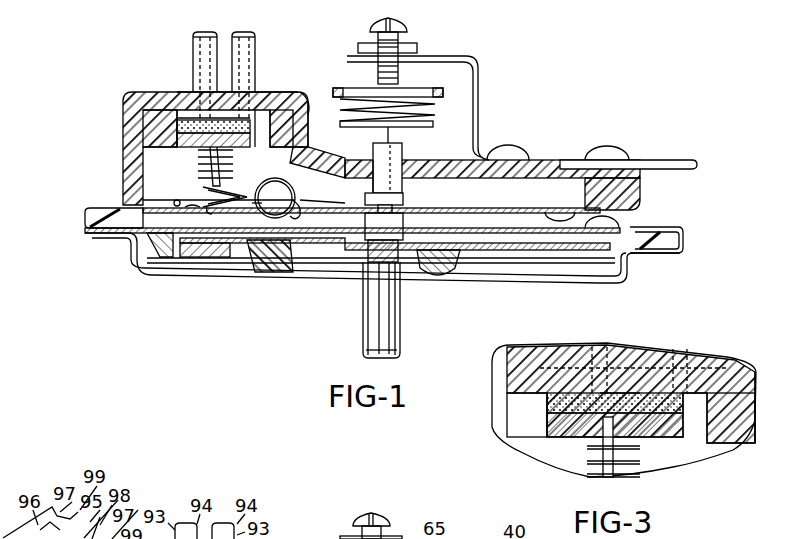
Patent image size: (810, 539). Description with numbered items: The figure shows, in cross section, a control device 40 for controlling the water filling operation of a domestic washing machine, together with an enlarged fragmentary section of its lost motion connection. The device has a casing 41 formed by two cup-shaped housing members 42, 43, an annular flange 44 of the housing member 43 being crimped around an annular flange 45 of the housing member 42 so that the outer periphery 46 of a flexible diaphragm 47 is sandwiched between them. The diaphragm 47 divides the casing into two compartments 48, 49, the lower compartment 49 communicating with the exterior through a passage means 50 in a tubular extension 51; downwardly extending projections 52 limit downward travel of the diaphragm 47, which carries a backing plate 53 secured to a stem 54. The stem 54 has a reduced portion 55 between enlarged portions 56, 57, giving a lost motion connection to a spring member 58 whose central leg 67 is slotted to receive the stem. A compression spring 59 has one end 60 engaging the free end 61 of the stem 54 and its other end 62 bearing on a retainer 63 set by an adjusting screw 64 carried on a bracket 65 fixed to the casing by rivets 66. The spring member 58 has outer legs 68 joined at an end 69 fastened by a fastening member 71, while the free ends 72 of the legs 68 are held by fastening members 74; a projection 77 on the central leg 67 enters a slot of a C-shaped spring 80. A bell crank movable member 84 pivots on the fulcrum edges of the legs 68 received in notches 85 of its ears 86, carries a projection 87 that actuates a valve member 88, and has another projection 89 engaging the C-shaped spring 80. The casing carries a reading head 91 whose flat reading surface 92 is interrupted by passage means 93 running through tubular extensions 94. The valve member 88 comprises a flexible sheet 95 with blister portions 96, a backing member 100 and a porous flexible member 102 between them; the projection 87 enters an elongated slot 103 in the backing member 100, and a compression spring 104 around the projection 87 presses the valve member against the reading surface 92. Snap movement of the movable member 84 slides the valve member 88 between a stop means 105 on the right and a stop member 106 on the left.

In FIG. 1, the control device 40 is at (506, 35).
In FIG. 1, the casing 41 is at (125, 152).
In FIG. 1, the housing member 42 is at (632, 183).
In FIG. 3, the housing member 42 is at (500, 360).
In FIG. 1, the housing member 43 is at (570, 284).
In FIG. 1, the annular flange 44 is at (683, 247).
In FIG. 1, the annular flange 45 is at (663, 232).
In FIG. 1, the outer periphery 46 is at (655, 253).
In FIG. 1, the flexible diaphragm 47 is at (502, 256).
In FIG. 1, the compartment 48 is at (537, 160).
In FIG. 1, the compartment 49 is at (545, 282).
In FIG. 1, the passage means 50 is at (400, 326).
In FIG. 1, the tubular extension 51 is at (365, 348).
In FIG. 1, the projections 52 is at (262, 272).
In FIG. 1, the backing plate 53 is at (500, 247).
In FIG. 1, the stem 54 is at (402, 186).
In FIG. 1, the reduced portion 55 is at (392, 214).
In FIG. 1, the enlarged portion 56 is at (403, 203).
In FIG. 1, the enlarged portion 57 is at (403, 228).
In FIG. 1, the spring member 58 is at (467, 210).
In FIG. 1, the compression spring 59 is at (432, 110).
In FIG. 1, the end of spring 60 is at (390, 137).
In FIG. 1, the free end of stem 61 is at (402, 147).
In FIG. 1, the other end of spring 62 is at (340, 110).
In FIG. 1, the retainer 63 is at (416, 88).
In FIG. 1, the adjusting screw 64 is at (378, 69).
In FIG. 1, the bracket 65 is at (480, 78).
In FIG. 1, the rivets 66 is at (508, 147).
In FIG. 1, the central leg 67 is at (320, 213).
In FIG. 1, the outer legs 68 is at (261, 217).
In FIG. 1, the end of spring member 69 is at (557, 220).
In FIG. 1, the fastening member 71 is at (602, 229).
In FIG. 1, the free ends 72 is at (175, 200).
In FIG. 1, the fastening members 74 is at (197, 212).
In FIG. 1, the projection 77 is at (298, 203).
In FIG. 1, the C-shaped spring 80 is at (287, 178).
In FIG. 1, the movable member 84 is at (225, 188).
In FIG. 1, the notches 85 is at (210, 213).
In FIG. 1, the ears 86 is at (213, 191).
In FIG. 1, the projection 87 is at (203, 160).
In FIG. 3, the projection 87 is at (606, 483).
In FIG. 1, the valve member 88 is at (123, 174).
In FIG. 3, the valve member 88 is at (578, 437).
In FIG. 1, the projection 89 is at (284, 182).
In FIG. 1, the reading head 91 is at (262, 100).
In FIG. 3, the reading head 91 is at (703, 360).
In FIG. 1, the reading surface 92 is at (274, 110).
In FIG. 3, the reading surface 92 is at (733, 365).
In FIG. 1, the passage means 93 is at (198, 64).
In FIG. 3, the passage means 93 is at (593, 347).
In FIG. 1, the tubular extensions 94 is at (221, 32).
In FIG. 1, the flexible sheet 95 is at (190, 107).
In FIG. 3, the flexible sheet 95 is at (560, 390).
In FIG. 3, the blister portions 96 is at (625, 393).
In FIG. 1, the backing member 100 is at (124, 98).
In FIG. 3, the backing member 100 is at (680, 438).
In FIG. 1, the flexible member 102 is at (250, 133).
In FIG. 3, the flexible member 102 is at (547, 400).
In FIG. 3, the elongated slot 103 is at (637, 424).
In FIG. 1, the compression spring 104 is at (228, 163).
In FIG. 3, the compression spring 104 is at (627, 478).
In FIG. 1, the stop means 105 is at (336, 92).
In FIG. 3, the stop means 105 is at (720, 444).
In FIG. 1, the stop member 106 is at (148, 118).
In FIG. 3, the stop member 106 is at (528, 438).